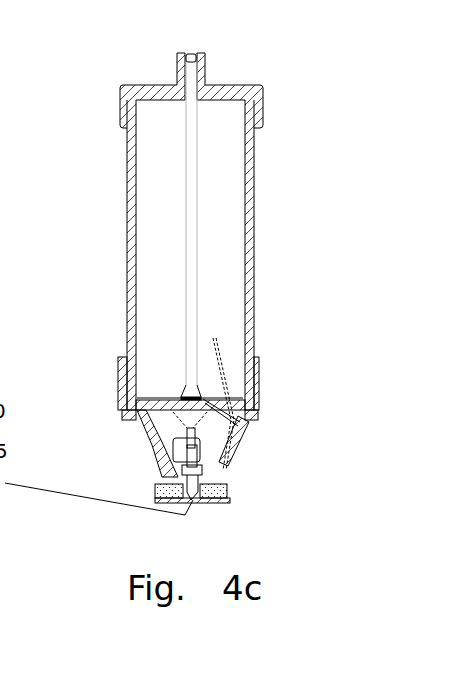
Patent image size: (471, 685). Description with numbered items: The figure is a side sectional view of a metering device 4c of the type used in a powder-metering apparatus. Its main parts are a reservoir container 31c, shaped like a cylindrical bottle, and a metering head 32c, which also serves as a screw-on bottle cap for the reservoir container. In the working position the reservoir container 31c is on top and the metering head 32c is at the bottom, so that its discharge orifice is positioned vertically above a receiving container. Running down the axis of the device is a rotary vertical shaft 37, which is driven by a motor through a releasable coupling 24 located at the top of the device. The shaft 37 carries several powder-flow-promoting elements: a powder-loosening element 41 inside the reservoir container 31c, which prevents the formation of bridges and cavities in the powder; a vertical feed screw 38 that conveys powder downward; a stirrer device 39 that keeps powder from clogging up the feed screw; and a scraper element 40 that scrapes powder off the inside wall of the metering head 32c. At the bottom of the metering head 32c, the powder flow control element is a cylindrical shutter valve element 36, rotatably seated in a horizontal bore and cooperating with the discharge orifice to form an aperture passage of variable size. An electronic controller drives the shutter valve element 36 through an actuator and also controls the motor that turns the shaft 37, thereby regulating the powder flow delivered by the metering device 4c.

The metering device 4c is at (105, 150).
The releasable coupling 24 is at (195, 54).
The reservoir container 31c is at (162, 248).
The rotary vertical shaft 37 is at (190, 302).
The powder-loosening element 41 is at (222, 363).
The metering head 32c is at (248, 422).
The stirrer device 39 is at (200, 455).
The scraper element 40 is at (195, 458).
The vertical feed screw 38 is at (190, 473).
The cylindrical shutter valve element 36 is at (168, 490).